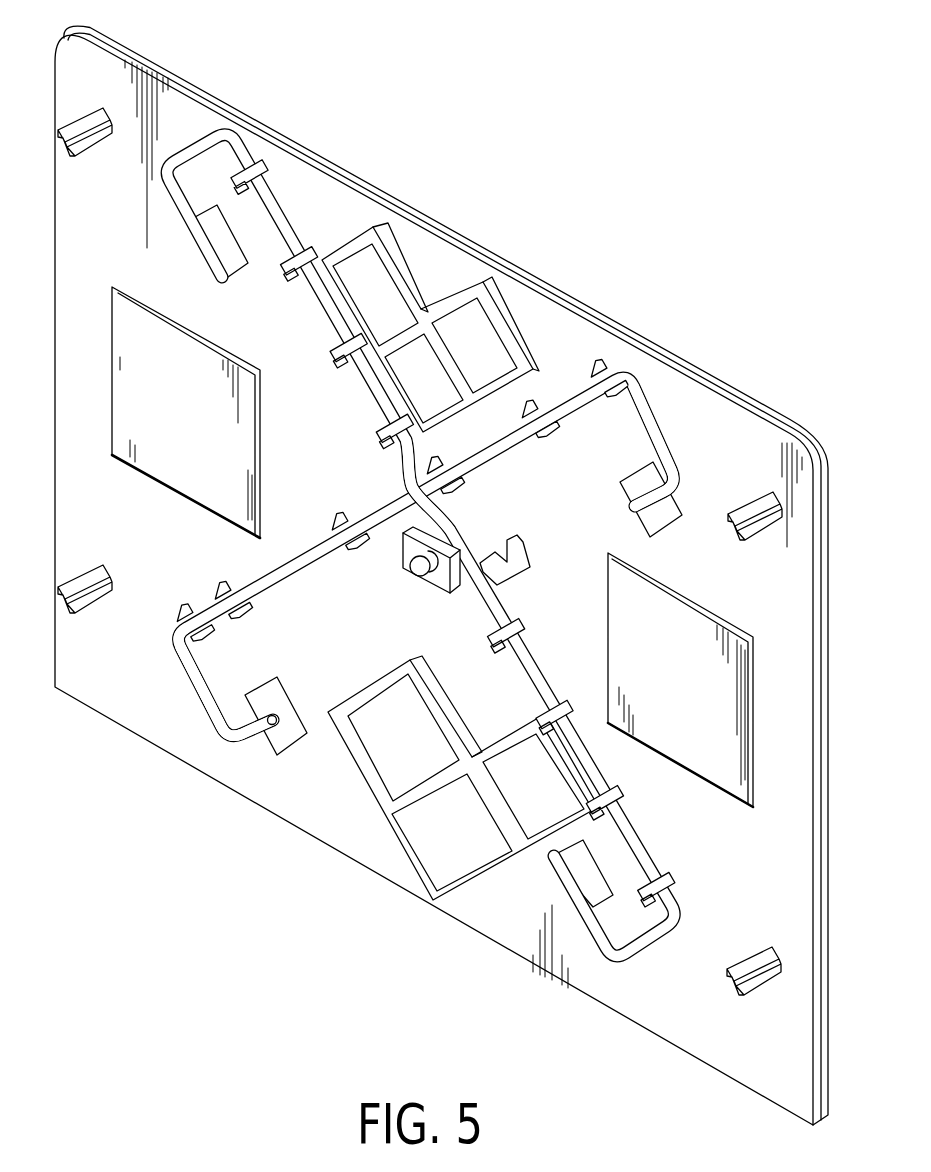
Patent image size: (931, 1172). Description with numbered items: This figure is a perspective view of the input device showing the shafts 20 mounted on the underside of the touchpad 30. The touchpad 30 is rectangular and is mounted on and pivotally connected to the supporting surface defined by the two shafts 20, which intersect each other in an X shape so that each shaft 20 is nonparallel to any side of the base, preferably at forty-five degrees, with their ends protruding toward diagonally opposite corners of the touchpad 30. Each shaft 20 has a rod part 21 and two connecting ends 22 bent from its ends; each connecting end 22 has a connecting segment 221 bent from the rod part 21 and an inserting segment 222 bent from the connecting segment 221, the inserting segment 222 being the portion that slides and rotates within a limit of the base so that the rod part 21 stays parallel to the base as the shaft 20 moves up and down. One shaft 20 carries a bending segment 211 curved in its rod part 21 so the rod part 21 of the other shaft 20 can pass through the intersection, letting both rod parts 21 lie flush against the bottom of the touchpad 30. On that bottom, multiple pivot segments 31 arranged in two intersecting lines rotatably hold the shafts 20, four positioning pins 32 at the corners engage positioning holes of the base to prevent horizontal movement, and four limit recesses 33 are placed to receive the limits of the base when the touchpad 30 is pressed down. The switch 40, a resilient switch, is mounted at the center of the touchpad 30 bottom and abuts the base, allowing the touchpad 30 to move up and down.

The shaft 20 is at (360, 586).
The rod part 21 is at (304, 542).
The bending segment 211 is at (410, 477).
The connecting end 22 is at (172, 672).
The connecting segment 221 is at (203, 715).
The inserting segment 222 is at (250, 738).
The touchpad 30 is at (643, 318).
The pivot segment 31 is at (255, 178).
The positioning pin 32 is at (732, 530).
The limit recess 33 is at (655, 500).
The switch 40 is at (415, 570).